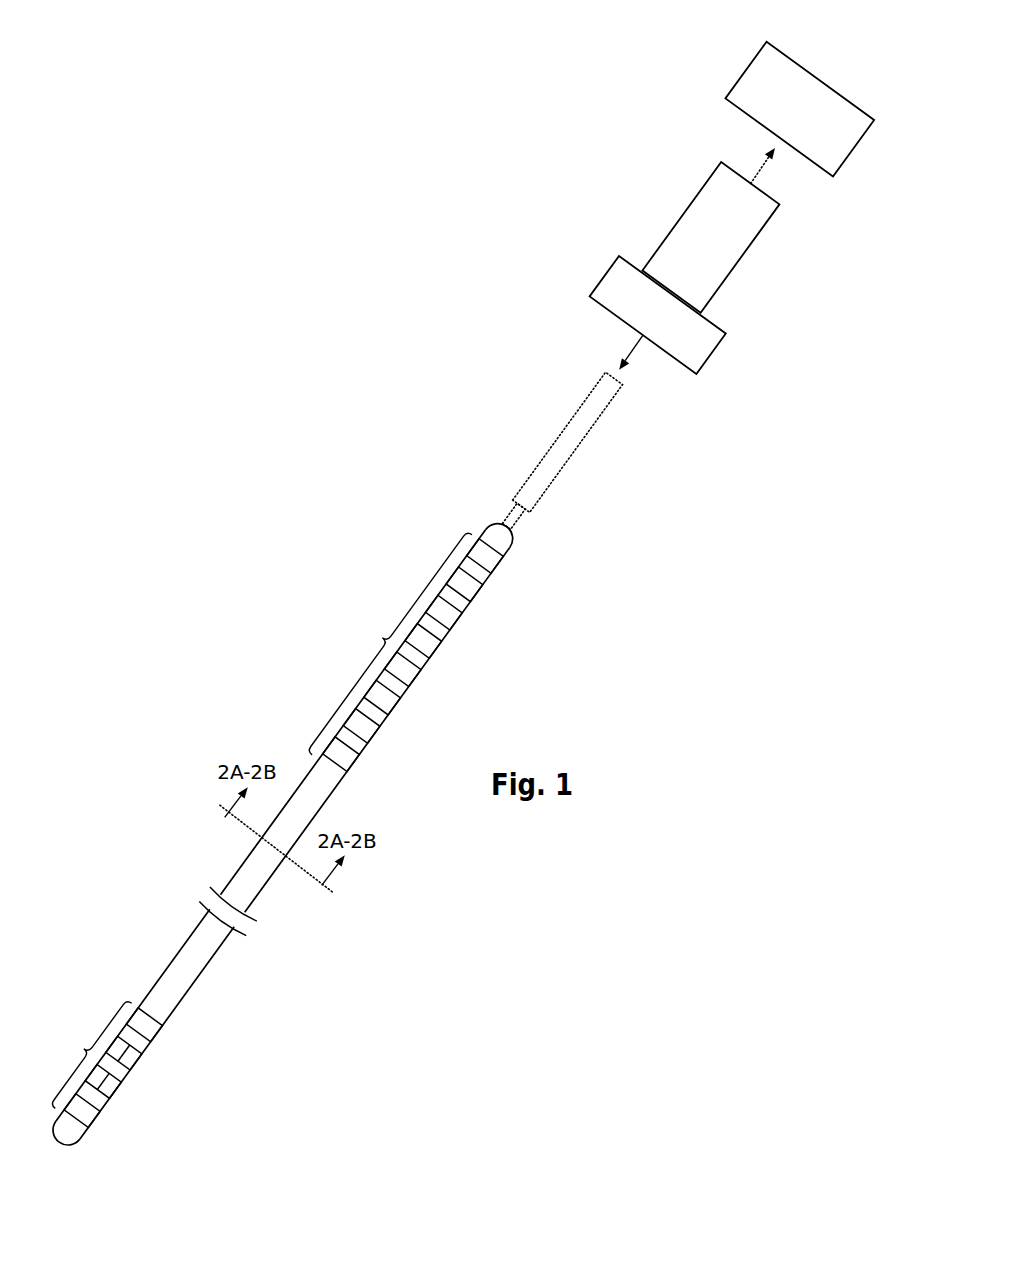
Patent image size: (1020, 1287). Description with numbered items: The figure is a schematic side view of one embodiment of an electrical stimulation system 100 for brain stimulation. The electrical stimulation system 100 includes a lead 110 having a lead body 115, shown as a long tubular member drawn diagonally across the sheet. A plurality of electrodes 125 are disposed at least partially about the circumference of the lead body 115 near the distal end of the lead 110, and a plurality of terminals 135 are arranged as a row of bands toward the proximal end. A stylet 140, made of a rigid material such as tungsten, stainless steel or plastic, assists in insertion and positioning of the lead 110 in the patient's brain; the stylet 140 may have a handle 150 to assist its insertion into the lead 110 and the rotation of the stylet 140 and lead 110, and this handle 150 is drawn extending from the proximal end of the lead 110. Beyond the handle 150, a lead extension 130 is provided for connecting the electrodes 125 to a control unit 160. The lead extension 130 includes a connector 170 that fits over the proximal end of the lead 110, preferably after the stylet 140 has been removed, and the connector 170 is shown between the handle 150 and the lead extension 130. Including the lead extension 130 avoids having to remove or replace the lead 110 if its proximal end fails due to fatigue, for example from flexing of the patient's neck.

The electrical stimulation system 100 is at (348, 482).
The lead 110 is at (272, 711).
The lead body 115 is at (173, 961).
The electrodes 125 is at (104, 1063).
The terminals 135 is at (402, 652).
The stylet 140 is at (511, 514).
The handle 150 is at (571, 430).
The connector 170 is at (608, 278).
The lead extension 130 is at (680, 223).
The control unit 160 is at (743, 84).